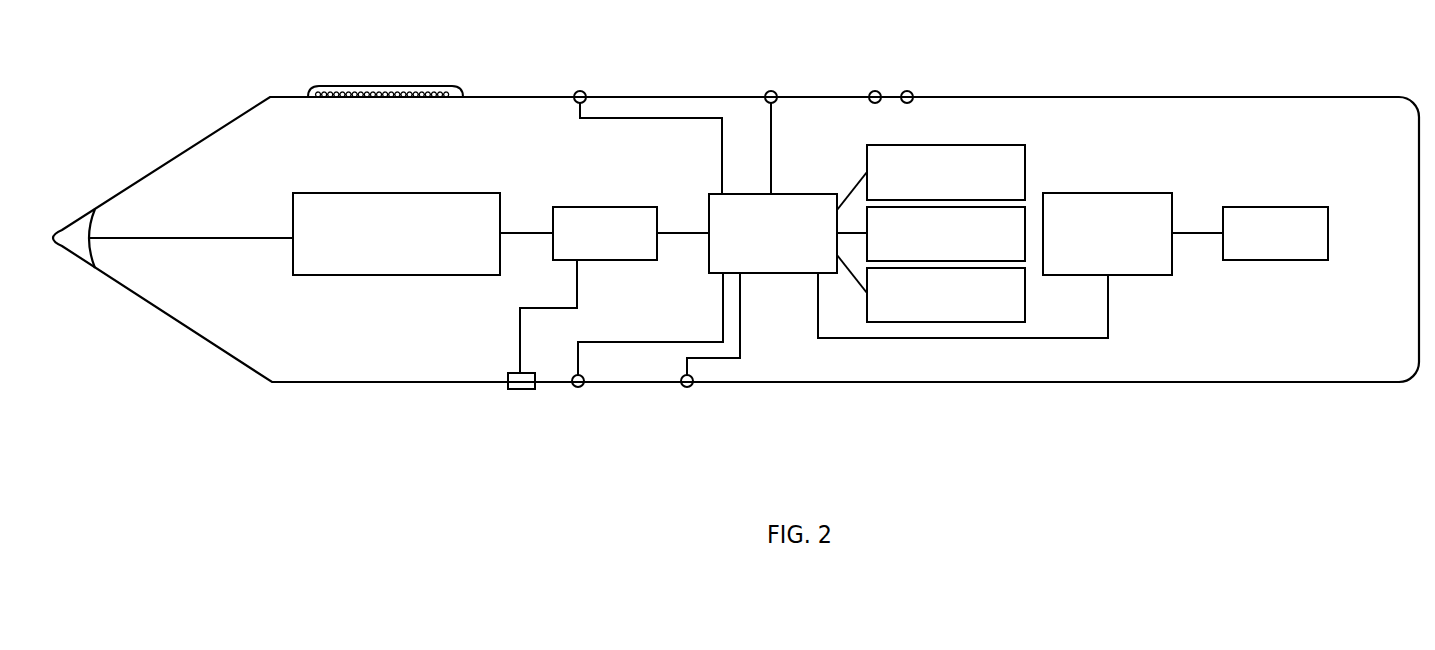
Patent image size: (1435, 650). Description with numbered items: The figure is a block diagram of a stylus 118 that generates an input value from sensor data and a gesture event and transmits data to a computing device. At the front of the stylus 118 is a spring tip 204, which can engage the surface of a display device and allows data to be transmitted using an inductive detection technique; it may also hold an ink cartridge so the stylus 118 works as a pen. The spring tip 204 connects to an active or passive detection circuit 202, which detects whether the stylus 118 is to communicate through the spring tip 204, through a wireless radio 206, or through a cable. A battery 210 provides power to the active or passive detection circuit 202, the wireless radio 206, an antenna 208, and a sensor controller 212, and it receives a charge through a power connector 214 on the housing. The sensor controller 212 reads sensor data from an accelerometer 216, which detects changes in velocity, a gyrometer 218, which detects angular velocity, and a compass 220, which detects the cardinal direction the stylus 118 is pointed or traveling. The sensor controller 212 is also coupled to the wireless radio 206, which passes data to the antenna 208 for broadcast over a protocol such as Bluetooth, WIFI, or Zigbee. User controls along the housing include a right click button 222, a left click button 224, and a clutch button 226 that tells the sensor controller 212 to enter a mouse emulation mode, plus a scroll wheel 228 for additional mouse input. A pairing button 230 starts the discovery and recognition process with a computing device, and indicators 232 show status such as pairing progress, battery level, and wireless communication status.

The stylus 118 is at (295, 383).
The active or passive detection circuit 202 is at (352, 277).
The spring tip 204 is at (70, 235).
The wireless radio 206 is at (1120, 193).
The antenna 208 is at (1275, 262).
The battery 210 is at (615, 205).
The sensor controller 212 is at (772, 273).
The power connector 214 is at (520, 391).
The accelerometer 216 is at (965, 145).
The gyrometer 218 is at (1028, 206).
The compass 220 is at (1025, 300).
The right click button 222 is at (580, 91).
The left click button 224 is at (578, 389).
The clutch button 226 is at (687, 389).
The scroll wheel 228 is at (375, 86).
The pairing button 230 is at (772, 91).
The indicators 232 is at (927, 80).